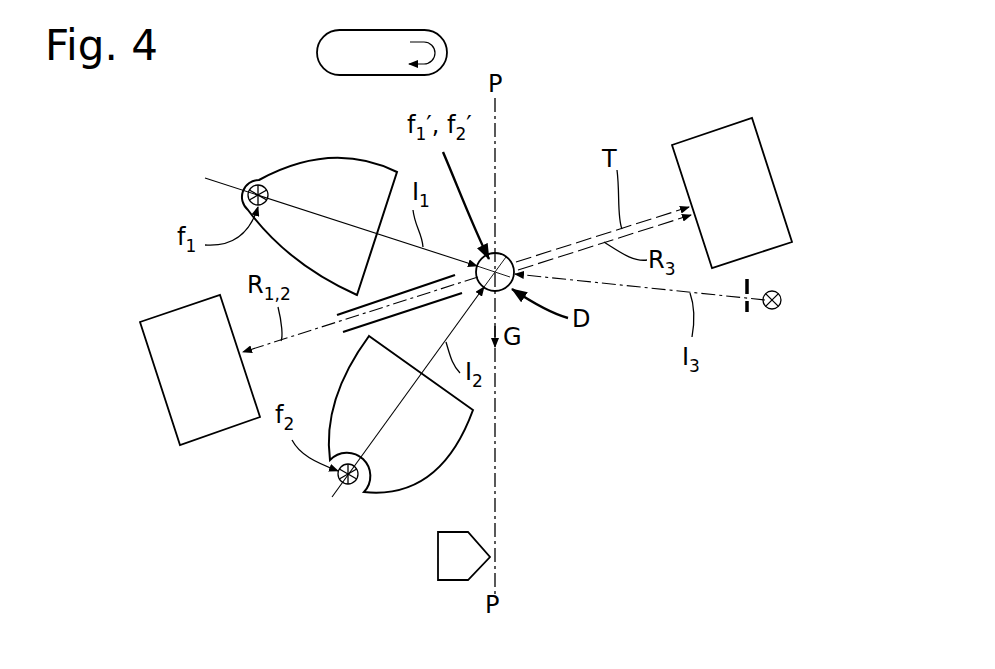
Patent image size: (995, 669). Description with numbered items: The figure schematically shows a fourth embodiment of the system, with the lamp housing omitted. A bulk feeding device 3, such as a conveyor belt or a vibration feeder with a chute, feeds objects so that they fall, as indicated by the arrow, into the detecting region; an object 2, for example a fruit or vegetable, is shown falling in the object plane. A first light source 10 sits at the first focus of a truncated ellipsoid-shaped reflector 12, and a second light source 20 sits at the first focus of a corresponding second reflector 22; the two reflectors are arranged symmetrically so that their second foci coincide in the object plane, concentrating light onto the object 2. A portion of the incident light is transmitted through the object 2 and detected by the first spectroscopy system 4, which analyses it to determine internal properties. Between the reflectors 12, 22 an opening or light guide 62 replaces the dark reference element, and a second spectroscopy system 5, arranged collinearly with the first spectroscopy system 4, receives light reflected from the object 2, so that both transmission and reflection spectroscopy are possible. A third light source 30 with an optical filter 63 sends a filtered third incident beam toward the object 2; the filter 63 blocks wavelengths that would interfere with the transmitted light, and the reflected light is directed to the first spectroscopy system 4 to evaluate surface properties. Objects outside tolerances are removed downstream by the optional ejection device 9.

The object 2 is at (512, 254).
The bulk feeding device 3 is at (333, 31).
The first spectroscopy system 4 is at (717, 150).
The second spectroscopy system 5 is at (187, 382).
The ejection device 9 is at (452, 548).
The light source 10 is at (258, 185).
The reflector 12 is at (306, 157).
The second light source 20 is at (364, 494).
The second reflector 22 is at (333, 403).
The third light source 30 is at (782, 302).
The opening (or light guide) 62 is at (388, 299).
The optical filter 63 is at (748, 314).